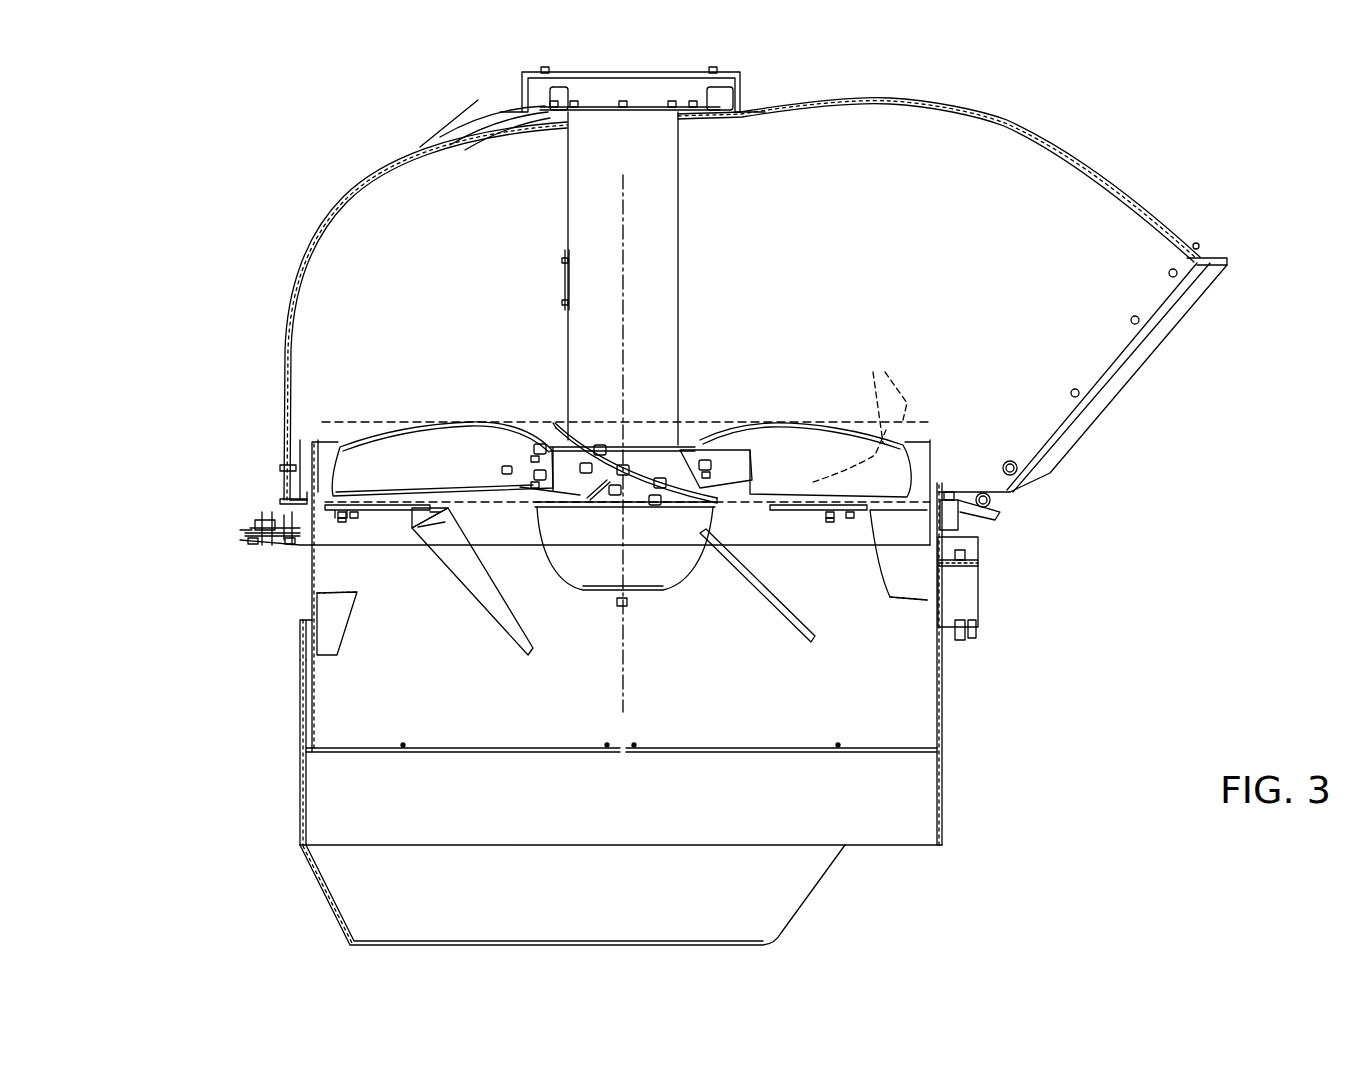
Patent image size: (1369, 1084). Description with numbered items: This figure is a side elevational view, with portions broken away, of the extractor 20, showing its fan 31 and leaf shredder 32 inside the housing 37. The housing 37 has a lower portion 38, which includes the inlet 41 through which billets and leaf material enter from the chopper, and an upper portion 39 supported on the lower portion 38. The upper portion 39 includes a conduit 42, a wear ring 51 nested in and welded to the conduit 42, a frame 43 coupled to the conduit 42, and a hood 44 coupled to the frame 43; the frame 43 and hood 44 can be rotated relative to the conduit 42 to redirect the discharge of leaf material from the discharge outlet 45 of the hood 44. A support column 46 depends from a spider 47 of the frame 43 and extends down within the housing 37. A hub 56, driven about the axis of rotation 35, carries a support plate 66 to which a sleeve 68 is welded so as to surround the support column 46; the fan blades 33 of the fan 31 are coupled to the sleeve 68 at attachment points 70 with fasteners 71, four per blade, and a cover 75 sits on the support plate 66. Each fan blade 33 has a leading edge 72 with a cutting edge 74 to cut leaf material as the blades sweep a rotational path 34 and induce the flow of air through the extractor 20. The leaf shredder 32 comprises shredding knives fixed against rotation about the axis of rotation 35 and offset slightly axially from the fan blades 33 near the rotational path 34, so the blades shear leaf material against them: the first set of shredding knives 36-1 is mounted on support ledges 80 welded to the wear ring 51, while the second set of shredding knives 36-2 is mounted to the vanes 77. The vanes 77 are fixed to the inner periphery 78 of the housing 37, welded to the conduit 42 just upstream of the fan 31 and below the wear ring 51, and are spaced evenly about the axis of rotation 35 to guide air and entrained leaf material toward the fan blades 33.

The extractor 20 is at (315, 100).
The spider 47 is at (478, 100).
The hood 44 is at (1115, 180).
The support column 46 is at (660, 215).
The discharge outlet 45 is at (1153, 338).
The fan 31 is at (362, 412).
The fan blades 33 is at (445, 435).
The sleeve 68 is at (640, 440).
The hub 56 is at (648, 462).
The attachment points 70 is at (730, 445).
The fasteners 71 is at (530, 453).
The rotational path 34 is at (885, 392).
The wear ring 51 is at (310, 445).
The frame 43 is at (270, 522).
The support ledges 80 is at (345, 506).
The support plate 66 is at (640, 510).
The first set of shredding knives 36-1 is at (370, 512).
The conduit 42 is at (315, 595).
The vanes 77 is at (335, 620).
The leading edge 72 is at (420, 591).
The cutting edge 74 is at (440, 515).
The cover 75 is at (580, 575).
The second set of shredding knives 36-2 is at (435, 540).
The lower portion 38 is at (310, 720).
The axis of rotation 35 is at (607, 702).
The inner periphery 78 is at (935, 650).
The upper portion 39 is at (958, 655).
The housing 37 is at (172, 645).
The leaf shredder 32 is at (400, 680).
The inlet 41 is at (820, 890).